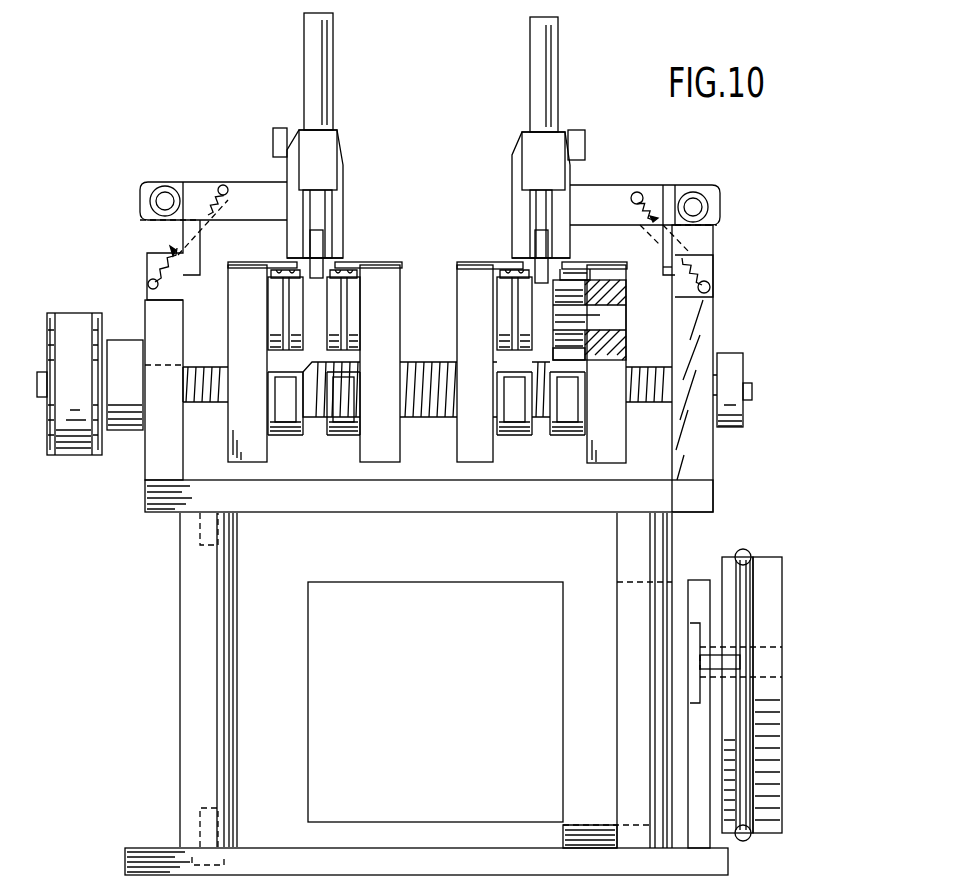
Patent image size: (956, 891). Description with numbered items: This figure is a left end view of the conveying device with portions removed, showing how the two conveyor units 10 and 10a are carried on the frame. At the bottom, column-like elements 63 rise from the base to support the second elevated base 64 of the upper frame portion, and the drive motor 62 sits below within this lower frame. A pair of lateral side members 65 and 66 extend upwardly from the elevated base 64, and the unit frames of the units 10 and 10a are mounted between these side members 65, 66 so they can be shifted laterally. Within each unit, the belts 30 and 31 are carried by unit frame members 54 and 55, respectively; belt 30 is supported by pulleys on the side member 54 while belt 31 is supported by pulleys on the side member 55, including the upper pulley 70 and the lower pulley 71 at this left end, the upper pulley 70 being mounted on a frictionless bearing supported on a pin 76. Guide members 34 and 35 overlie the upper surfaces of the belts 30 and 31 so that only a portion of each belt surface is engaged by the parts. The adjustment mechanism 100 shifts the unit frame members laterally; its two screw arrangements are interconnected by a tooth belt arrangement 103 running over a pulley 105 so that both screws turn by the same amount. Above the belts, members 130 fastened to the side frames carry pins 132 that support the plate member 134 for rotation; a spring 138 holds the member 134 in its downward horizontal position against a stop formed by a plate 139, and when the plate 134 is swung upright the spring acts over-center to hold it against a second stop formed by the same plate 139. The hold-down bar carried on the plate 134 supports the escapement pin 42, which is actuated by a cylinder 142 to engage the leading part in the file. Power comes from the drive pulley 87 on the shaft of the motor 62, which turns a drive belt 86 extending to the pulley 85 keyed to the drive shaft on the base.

The conveyor unit 10 is at (508, 162).
The second conveyor unit 10a is at (368, 248).
The cylinder 142 is at (548, 106).
The first plunger 42 is at (542, 248).
The plate member 134 is at (604, 190).
The pin 132 is at (696, 204).
The member 130 is at (706, 238).
The spring 138 is at (673, 260).
The plate 139 is at (663, 267).
The belt 31 is at (572, 268).
The guide member 35 is at (600, 268).
The guide member 34 is at (483, 264).
The belt 30 is at (497, 282).
The pin 76 is at (623, 322).
The upper pulley 70 is at (575, 352).
The adjustment mechanism 100 is at (426, 420).
The unit frame member 54 is at (494, 462).
The unit frame member 55 is at (626, 452).
The lower pulley 71 is at (568, 436).
The lateral side member 66 is at (713, 455).
The lateral side member 65 is at (156, 460).
The elevated base 64 is at (412, 503).
The column-like elements 63 is at (229, 568).
The drive motor 62 is at (466, 728).
The drive belt 86 is at (745, 552).
The drive pulley 87 is at (773, 688).
The pulley 85 is at (767, 793).
The tooth belt arrangement 103 is at (82, 312).
The pulley 105 is at (102, 315).